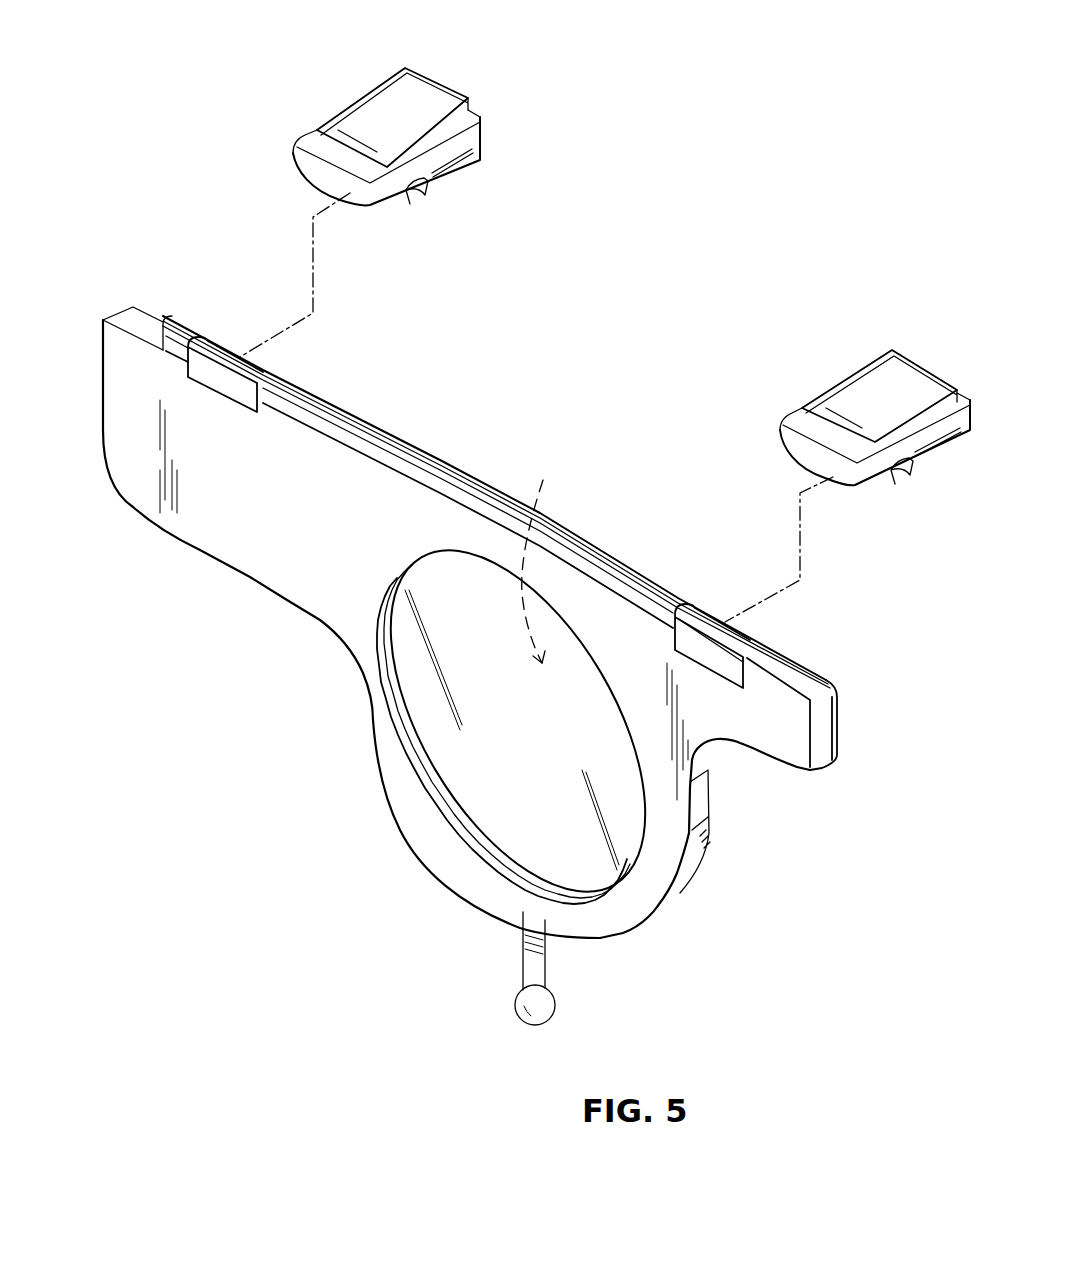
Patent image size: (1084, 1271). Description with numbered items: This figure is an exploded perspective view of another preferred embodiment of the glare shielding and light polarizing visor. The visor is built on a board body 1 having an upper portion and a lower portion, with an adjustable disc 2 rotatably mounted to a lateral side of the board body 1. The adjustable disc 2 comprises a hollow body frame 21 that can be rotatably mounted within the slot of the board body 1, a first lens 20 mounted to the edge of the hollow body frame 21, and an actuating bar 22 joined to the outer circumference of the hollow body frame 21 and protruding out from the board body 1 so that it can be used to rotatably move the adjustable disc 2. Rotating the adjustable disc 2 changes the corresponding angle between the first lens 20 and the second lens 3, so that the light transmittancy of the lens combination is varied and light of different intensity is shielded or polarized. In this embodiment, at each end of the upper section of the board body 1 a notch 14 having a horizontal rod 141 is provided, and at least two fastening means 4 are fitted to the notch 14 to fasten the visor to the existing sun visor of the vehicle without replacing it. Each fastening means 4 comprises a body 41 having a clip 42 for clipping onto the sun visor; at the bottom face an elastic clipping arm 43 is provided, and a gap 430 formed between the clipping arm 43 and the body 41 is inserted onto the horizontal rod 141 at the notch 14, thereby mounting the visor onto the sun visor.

The board body 1 is at (314, 600).
The adjustable disc 2 is at (494, 830).
The second lens 3 is at (538, 556).
The fastening means 4 is at (310, 122).
The notch 14 is at (210, 335).
The horizontal rod 141 is at (247, 366).
The first lens 20 is at (473, 770).
The hollow body frame 21 is at (490, 850).
The actuating bar 22 is at (522, 988).
The body 41 is at (453, 127).
The clip 42 is at (377, 108).
The elastic clipping arm 43 is at (413, 203).
The gap 430 is at (423, 184).